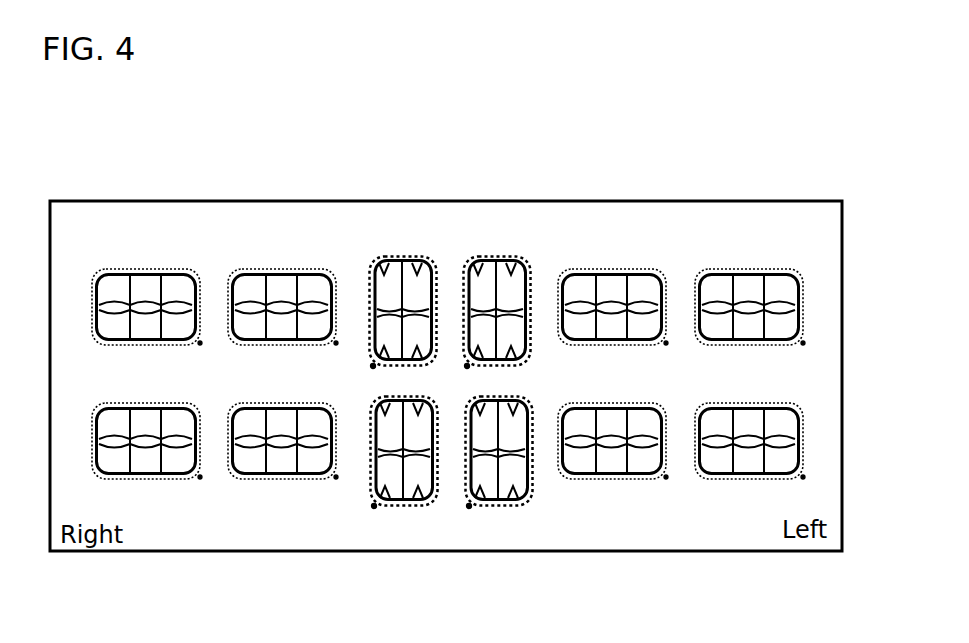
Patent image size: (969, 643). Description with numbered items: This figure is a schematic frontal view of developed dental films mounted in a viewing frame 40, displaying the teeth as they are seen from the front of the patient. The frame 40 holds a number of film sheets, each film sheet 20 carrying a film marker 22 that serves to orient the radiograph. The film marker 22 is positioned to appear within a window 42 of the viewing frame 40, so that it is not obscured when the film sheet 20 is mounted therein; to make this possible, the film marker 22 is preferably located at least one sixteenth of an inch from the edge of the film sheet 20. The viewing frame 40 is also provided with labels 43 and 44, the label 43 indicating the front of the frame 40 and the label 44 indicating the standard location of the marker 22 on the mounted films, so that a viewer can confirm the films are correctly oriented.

The viewing frame 40 is at (727, 200).
The window 42 is at (262, 270).
The label 43 is at (422, 212).
The film sheet 20 is at (297, 476).
The label 44 is at (375, 506).
The film marker 22 is at (469, 506).